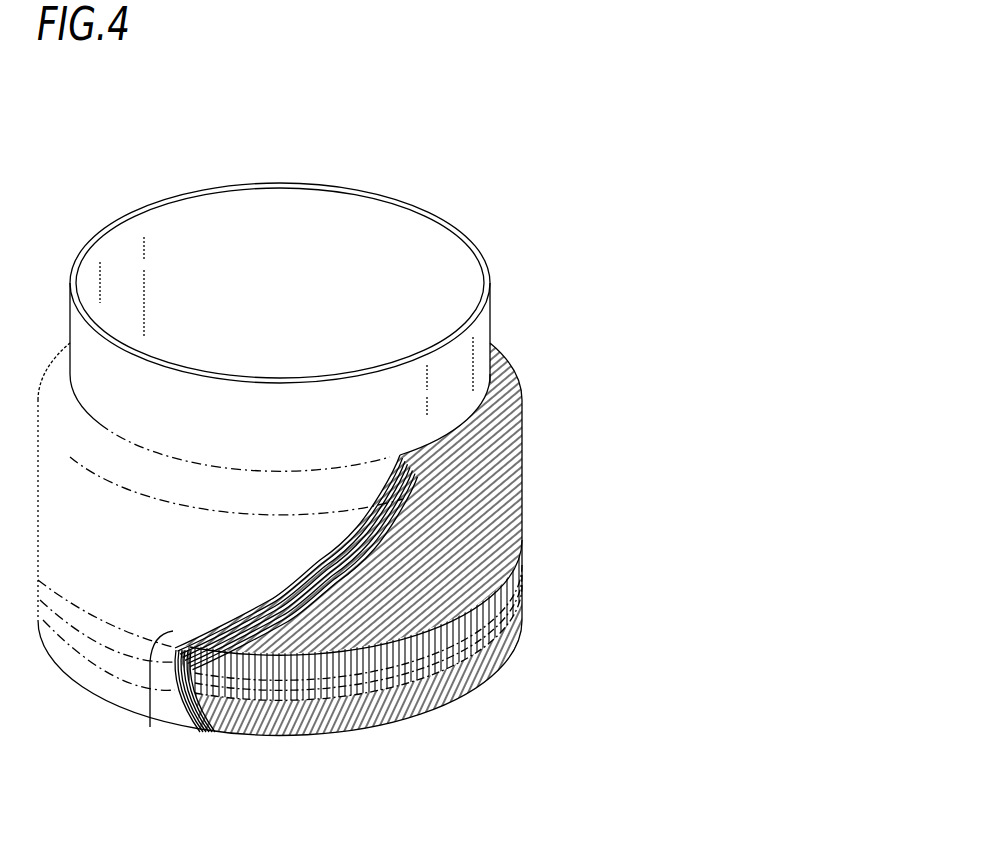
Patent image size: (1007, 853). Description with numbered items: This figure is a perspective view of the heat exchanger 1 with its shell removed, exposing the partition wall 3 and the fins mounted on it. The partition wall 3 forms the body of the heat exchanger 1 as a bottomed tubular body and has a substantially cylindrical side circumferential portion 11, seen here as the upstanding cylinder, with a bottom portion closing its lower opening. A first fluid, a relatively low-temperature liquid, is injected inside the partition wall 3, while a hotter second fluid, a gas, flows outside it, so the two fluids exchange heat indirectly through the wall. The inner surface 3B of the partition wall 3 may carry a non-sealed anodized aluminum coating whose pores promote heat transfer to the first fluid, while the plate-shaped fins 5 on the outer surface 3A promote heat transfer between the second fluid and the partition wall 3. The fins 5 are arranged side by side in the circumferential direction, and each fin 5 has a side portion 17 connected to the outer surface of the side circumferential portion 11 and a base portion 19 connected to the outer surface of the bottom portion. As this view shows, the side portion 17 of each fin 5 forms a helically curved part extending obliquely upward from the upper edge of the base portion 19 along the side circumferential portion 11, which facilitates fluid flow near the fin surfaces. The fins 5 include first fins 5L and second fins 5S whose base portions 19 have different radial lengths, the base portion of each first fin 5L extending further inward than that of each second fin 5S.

The heat exchanger 1 is at (465, 128).
The partition wall 3 is at (508, 258).
The outer surface 3A is at (490, 327).
The inner surface 3B is at (384, 214).
The side circumferential portion 11 is at (447, 372).
The plate-shaped fins 5 is at (537, 518).
The first fins 5L is at (267, 592).
The second fins 5S is at (247, 616).
The side portion 17 is at (150, 727).
The base portion 19 is at (186, 730).